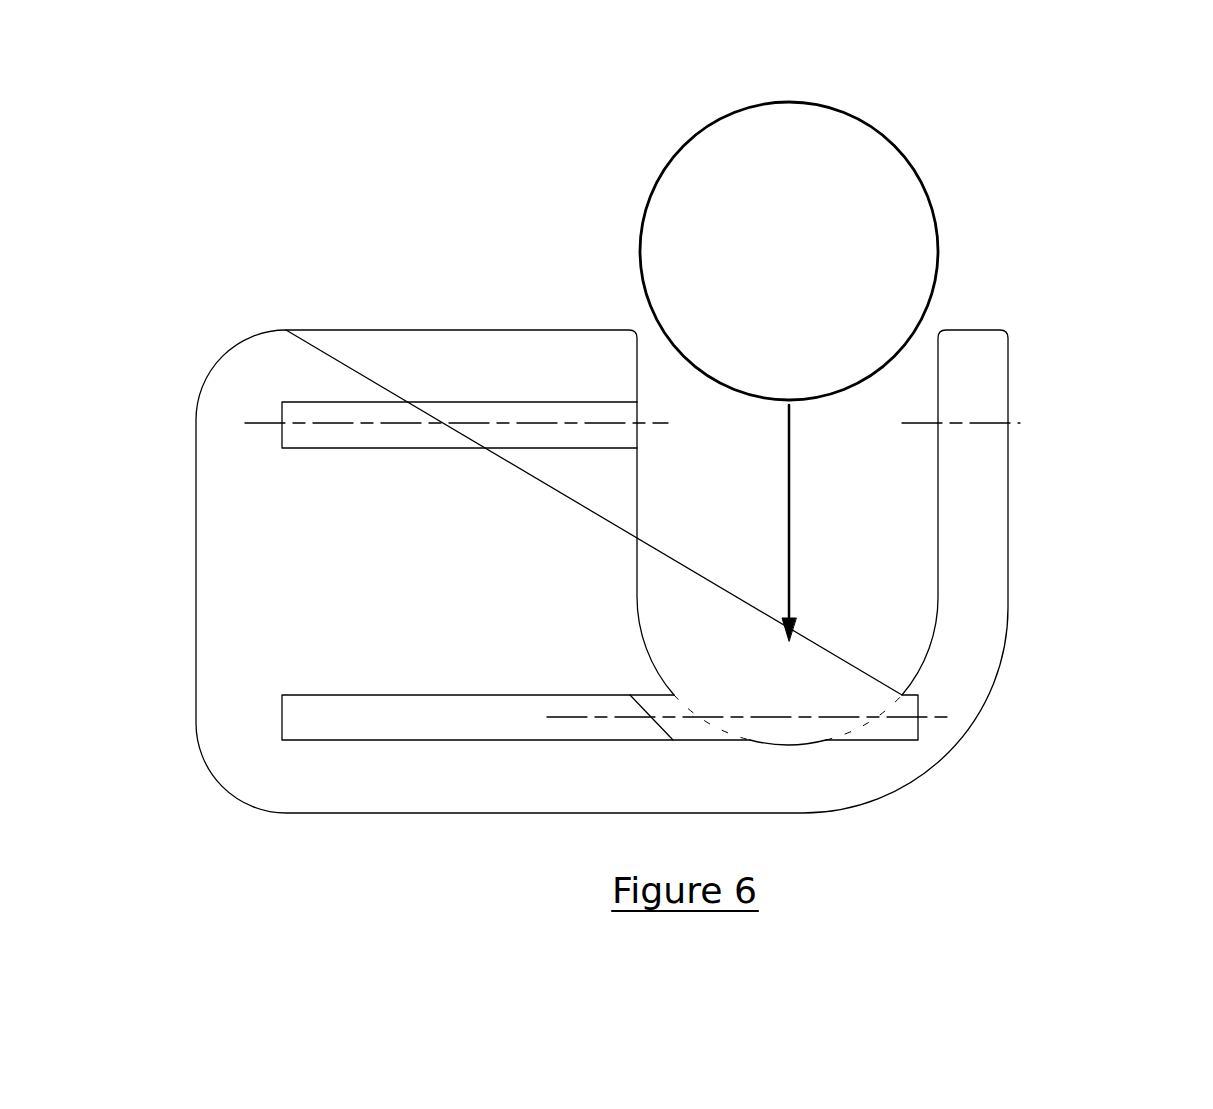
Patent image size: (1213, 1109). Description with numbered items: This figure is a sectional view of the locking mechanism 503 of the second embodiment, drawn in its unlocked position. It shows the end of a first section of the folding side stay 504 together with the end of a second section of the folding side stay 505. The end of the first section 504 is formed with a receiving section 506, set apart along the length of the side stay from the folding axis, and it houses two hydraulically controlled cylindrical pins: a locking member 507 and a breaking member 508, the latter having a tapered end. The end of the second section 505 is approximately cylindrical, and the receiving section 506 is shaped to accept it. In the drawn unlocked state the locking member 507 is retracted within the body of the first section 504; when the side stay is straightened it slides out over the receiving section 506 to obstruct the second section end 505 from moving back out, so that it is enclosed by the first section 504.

The locking mechanism 503 is at (685, 451).
The end of first section of folding side stay 504 is at (363, 357).
The end of second section of folding side stay 505 is at (686, 178).
The receiving section 506 is at (866, 573).
The locking member 507 is at (485, 430).
The breaking member 508 is at (472, 718).